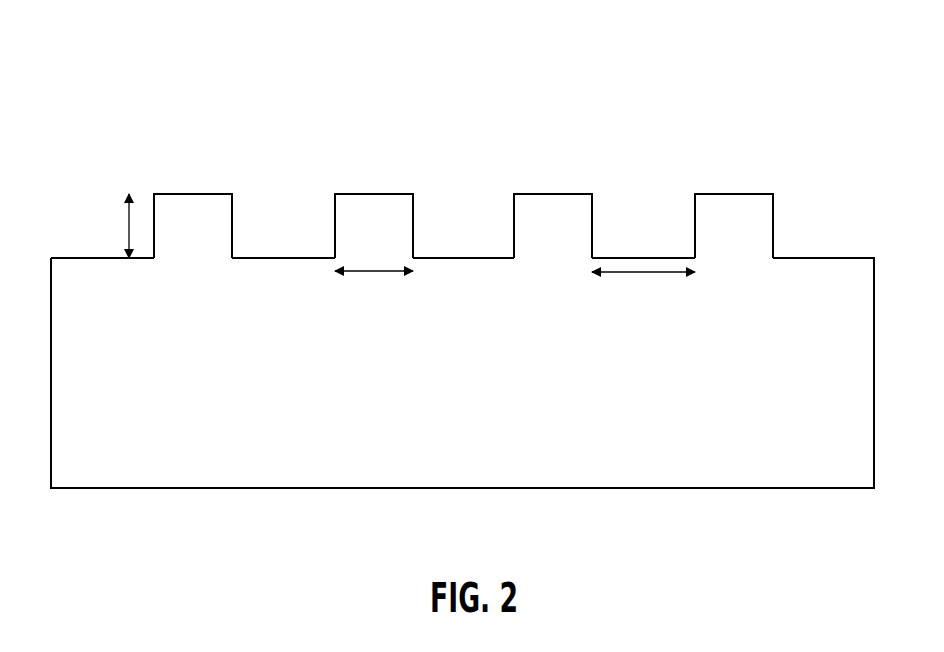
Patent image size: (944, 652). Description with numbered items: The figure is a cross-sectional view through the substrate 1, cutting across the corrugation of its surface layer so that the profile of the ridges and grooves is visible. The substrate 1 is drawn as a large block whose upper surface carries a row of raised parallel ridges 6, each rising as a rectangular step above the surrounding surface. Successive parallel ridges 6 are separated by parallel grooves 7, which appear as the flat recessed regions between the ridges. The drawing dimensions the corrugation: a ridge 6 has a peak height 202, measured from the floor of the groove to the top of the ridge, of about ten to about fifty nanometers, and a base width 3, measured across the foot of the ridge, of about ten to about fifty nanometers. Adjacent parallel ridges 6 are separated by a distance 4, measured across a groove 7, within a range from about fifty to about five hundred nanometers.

The substrate 1 is at (118, 113).
The ridge 6 is at (195, 207).
The groove 7 is at (282, 235).
The peak height 202 is at (129, 227).
The base width 3 is at (375, 271).
The distance 4 is at (644, 272).